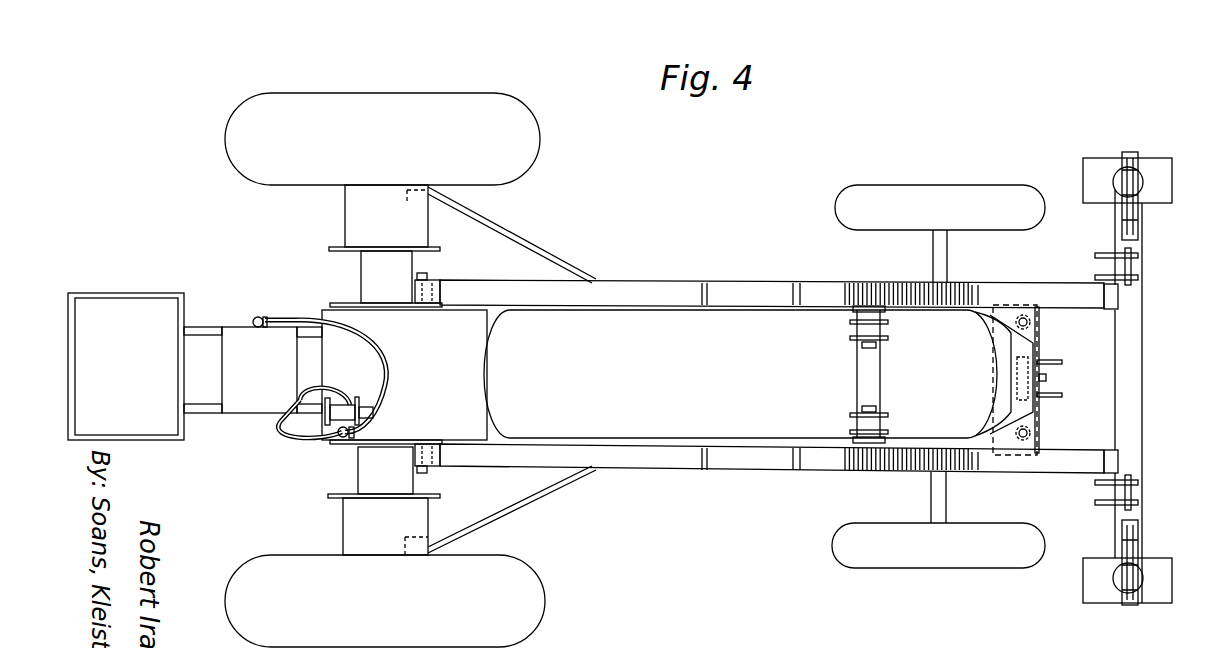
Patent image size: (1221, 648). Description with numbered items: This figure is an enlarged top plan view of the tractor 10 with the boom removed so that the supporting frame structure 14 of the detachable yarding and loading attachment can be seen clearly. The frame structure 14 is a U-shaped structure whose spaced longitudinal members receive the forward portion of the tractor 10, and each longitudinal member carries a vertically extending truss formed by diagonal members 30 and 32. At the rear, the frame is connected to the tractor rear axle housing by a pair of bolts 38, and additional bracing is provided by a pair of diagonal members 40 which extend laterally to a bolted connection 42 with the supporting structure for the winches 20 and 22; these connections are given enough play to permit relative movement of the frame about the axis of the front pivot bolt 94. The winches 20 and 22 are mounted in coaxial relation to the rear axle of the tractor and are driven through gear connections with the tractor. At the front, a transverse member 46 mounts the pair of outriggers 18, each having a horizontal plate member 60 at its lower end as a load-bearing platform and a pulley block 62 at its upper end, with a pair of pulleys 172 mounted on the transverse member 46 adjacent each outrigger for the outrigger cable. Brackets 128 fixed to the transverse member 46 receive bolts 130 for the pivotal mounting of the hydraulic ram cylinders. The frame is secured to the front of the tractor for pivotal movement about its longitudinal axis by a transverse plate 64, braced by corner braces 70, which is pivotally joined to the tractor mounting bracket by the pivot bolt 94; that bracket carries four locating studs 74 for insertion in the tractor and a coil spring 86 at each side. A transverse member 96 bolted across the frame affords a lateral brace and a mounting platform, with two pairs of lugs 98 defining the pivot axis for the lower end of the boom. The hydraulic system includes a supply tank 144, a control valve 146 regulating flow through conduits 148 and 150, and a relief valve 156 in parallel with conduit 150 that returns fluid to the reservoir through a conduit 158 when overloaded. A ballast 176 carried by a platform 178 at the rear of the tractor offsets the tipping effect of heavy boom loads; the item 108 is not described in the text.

The tractor 10 is at (712, 376).
The frame structure 14 is at (628, 472).
The outrigger members 18 is at (1143, 147).
The power driven winch 20 is at (358, 470).
The power driven winch 22 is at (412, 256).
The diagonal member 30 is at (737, 288).
The diagonal member 32 is at (898, 288).
The bolts 38 is at (424, 274).
The diagonal members 40 is at (513, 231).
The bolted connection 42 is at (407, 196).
The transverse member 46 is at (1143, 308).
The horizontal plate member 60 is at (1172, 163).
The pulley block 62 is at (1122, 160).
The transverse plate 64 is at (1039, 350).
The corner braces 70 is at (1007, 318).
The locating studs 74 is at (1010, 390).
The coil spring 86 is at (1032, 320).
The pivot bolt 94 is at (1046, 377).
The transverse member 96 is at (857, 371).
The lugs 98 is at (850, 339).
The block 108 is at (858, 348).
The bracket 128 is at (1097, 274).
The bolt 130 is at (1134, 264).
The supply tank 144 is at (242, 395).
The control valve 146 is at (357, 398).
The conduit 148 is at (302, 400).
The conduit 150 is at (437, 432).
The relief valve 156 is at (337, 438).
The conduit 158 is at (362, 353).
The pulleys 172 is at (1142, 232).
The ballast 176 is at (146, 370).
The platform 178 is at (130, 292).